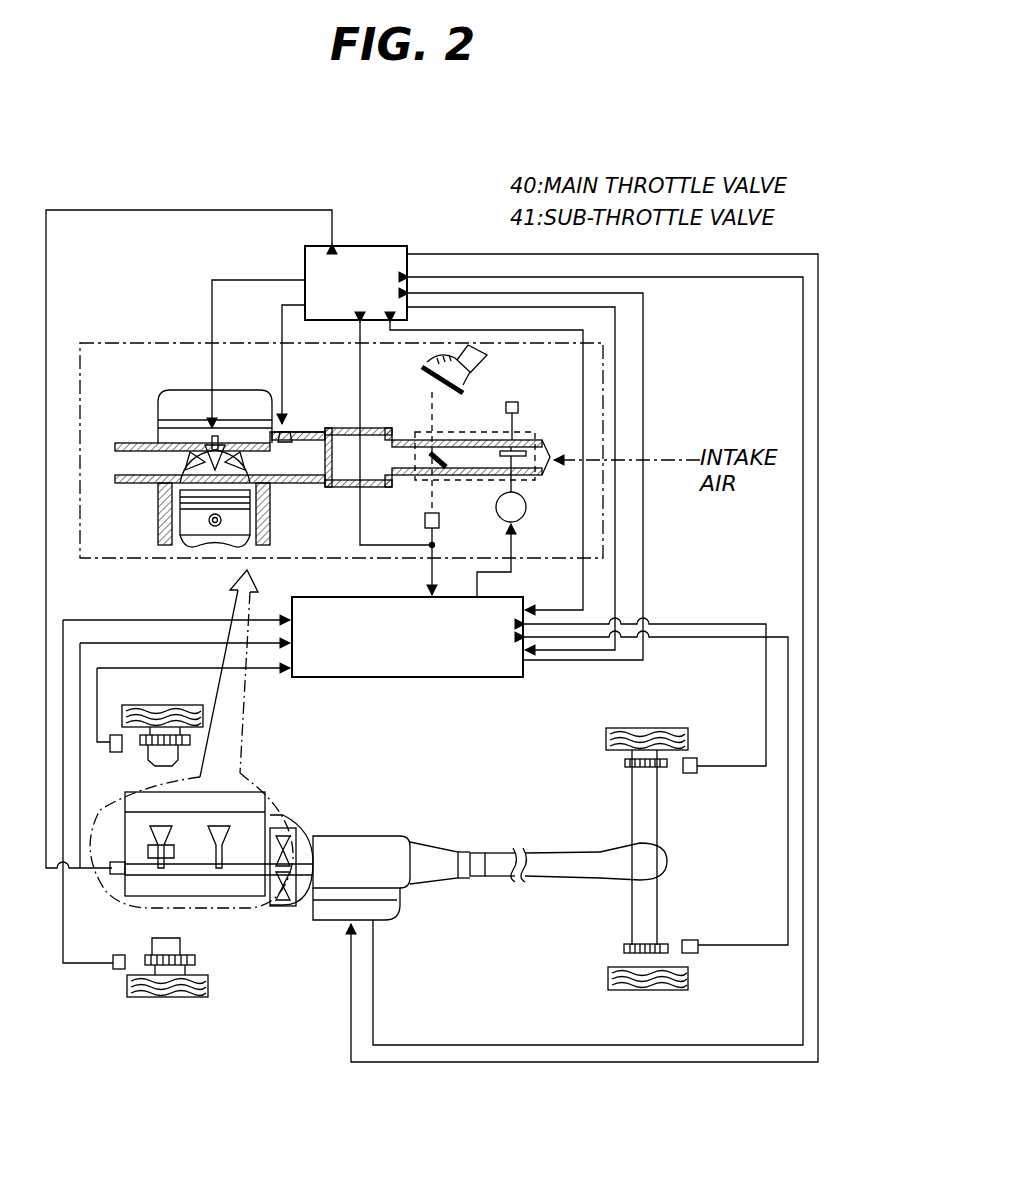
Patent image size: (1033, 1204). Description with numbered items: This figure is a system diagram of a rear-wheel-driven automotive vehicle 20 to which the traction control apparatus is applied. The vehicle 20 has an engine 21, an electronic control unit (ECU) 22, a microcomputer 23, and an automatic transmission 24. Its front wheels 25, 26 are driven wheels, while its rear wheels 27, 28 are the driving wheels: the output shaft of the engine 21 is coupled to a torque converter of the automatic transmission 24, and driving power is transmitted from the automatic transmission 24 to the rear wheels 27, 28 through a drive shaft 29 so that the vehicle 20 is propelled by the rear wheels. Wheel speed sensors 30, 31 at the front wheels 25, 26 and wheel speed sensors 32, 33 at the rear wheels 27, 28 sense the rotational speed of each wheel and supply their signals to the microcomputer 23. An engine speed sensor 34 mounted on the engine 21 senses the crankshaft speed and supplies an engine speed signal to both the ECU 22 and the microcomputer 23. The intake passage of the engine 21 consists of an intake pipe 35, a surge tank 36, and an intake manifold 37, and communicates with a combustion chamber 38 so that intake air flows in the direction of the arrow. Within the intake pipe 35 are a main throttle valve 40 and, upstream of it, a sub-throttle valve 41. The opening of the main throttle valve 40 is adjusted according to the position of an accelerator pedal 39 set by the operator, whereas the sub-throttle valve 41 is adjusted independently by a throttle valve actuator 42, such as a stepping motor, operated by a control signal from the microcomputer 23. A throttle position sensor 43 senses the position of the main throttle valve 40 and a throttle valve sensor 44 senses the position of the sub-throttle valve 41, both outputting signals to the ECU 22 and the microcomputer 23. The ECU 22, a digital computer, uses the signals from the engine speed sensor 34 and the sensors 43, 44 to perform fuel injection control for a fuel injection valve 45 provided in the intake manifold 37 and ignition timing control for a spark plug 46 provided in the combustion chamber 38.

The automotive vehicle 20 is at (312, 932).
The engine 21 is at (102, 341).
The electronic control unit 22 is at (368, 246).
The microcomputer 23 is at (520, 597).
The automatic transmission 24 is at (360, 836).
The front wheel 25 is at (130, 712).
The front wheel 26 is at (168, 998).
The rear wheel 27 is at (643, 728).
The rear wheel 28 is at (652, 990).
The drive shaft 29 is at (556, 880).
The wheel speed sensor 30 is at (112, 752).
The wheel speed sensor 31 is at (110, 968).
The wheel speed sensor 32 is at (690, 775).
The wheel speed sensor 33 is at (688, 940).
The engine speed sensor 34 is at (125, 872).
The intake pipe 35 is at (532, 478).
The surge tank 36 is at (388, 488).
The intake manifold 37 is at (297, 484).
The combustion chamber 38 is at (145, 484).
The accelerator pedal 39 is at (425, 380).
The main throttle valve 40 is at (443, 455).
The sub-throttle valve 41 is at (518, 450).
The throttle valve actuator 42 is at (524, 516).
The throttle position sensor 43 is at (439, 521).
The throttle valve sensor 44 is at (516, 402).
The fuel injection valve 45 is at (286, 430).
The spark plug 46 is at (222, 432).